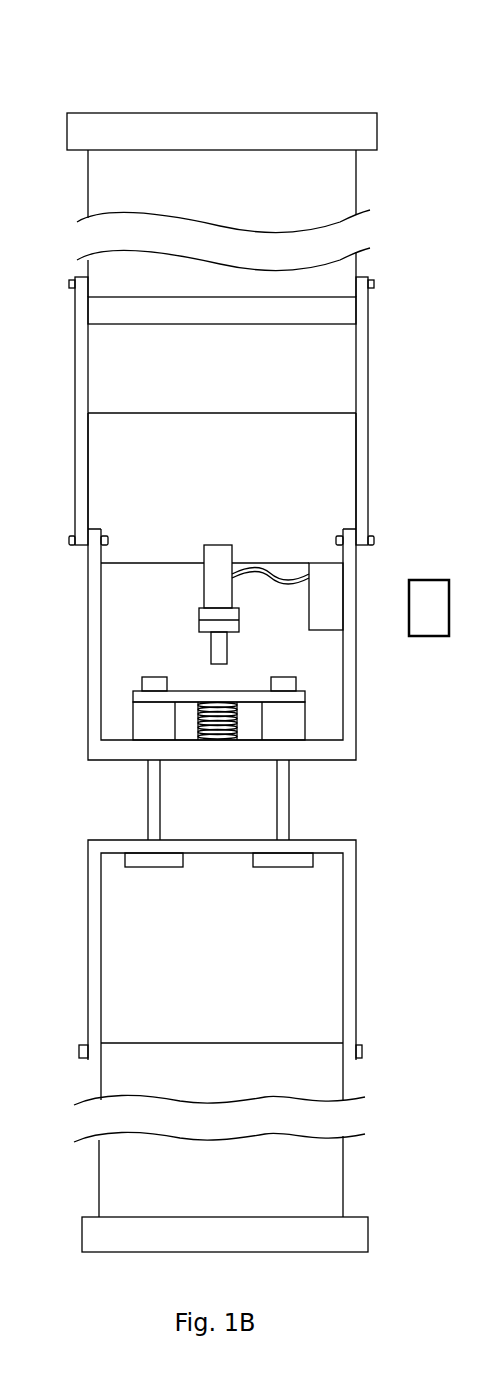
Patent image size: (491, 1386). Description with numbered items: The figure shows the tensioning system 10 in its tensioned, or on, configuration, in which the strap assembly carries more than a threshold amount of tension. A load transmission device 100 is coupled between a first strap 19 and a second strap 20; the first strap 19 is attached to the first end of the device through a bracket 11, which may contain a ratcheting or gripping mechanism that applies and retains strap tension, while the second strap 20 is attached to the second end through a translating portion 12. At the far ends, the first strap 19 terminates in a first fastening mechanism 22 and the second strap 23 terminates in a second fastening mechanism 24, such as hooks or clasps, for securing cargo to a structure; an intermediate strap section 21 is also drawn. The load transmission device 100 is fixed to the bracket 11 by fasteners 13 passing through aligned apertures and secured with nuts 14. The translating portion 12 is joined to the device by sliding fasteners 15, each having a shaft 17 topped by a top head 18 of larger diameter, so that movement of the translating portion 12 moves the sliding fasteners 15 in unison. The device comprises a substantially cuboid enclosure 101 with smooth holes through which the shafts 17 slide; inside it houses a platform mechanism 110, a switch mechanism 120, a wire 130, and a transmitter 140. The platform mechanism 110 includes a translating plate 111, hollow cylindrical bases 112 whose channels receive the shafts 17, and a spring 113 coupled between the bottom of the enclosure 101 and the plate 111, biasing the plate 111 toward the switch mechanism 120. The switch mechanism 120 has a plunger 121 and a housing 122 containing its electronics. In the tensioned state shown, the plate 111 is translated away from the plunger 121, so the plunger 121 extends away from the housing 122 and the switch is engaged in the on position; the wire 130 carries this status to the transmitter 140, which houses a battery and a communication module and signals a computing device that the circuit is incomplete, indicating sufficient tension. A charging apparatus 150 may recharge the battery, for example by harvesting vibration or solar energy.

The tensioning system 10 is at (118, 80).
The bracket 11 is at (350, 368).
The translating portion 12 is at (106, 900).
The fastener 13 is at (68, 540).
The nut 14 is at (103, 528).
The sliding fastener 15 is at (140, 773).
The shaft 17 is at (283, 796).
The top head 18 is at (287, 683).
The first strap 19 is at (108, 1073).
The second strap 20 is at (125, 265).
The upper column 21 is at (128, 183).
The first fastening mechanism 22 is at (80, 127).
The second strap 23 is at (112, 1173).
The second fastening mechanism 24 is at (88, 1230).
The load transmission device 100 is at (360, 602).
The enclosure 101 is at (95, 645).
The platform mechanism 110 is at (120, 716).
The translating plate 111 is at (132, 693).
The base 112 is at (290, 714).
The spring 113 is at (237, 719).
The switch mechanism 120 is at (190, 610).
The plunger 121 is at (218, 640).
The housing 122 is at (211, 590).
The wire 130 is at (272, 572).
The transmitter 140 is at (348, 632).
The charging apparatus 150 is at (343, 617).